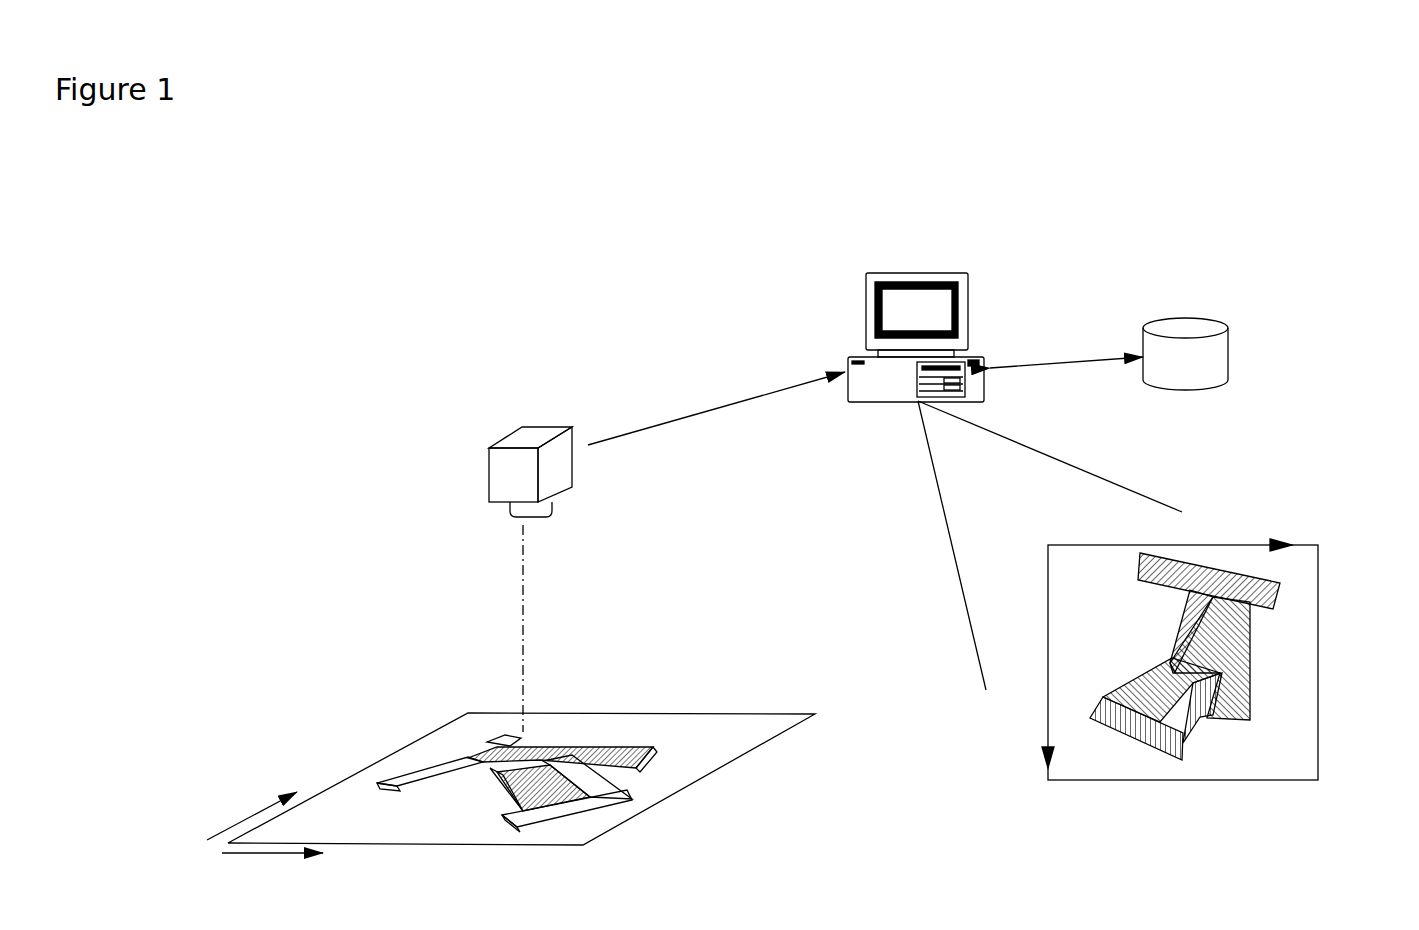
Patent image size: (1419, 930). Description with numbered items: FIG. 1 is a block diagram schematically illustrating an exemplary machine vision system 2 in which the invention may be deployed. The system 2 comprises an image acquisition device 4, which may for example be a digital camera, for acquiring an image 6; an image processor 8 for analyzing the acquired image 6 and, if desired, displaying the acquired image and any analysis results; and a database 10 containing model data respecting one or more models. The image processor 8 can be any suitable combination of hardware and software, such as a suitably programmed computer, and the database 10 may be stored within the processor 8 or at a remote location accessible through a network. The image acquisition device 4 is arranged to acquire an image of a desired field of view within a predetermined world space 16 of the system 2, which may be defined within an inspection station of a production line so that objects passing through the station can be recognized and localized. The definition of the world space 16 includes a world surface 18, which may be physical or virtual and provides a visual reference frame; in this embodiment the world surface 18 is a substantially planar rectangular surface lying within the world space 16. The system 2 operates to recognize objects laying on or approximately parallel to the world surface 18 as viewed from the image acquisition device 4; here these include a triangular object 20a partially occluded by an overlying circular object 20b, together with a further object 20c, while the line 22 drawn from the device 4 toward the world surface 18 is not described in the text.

The system 2 is at (711, 270).
The image acquisition device 4 is at (489, 470).
The image 6 is at (1337, 580).
The image processor 8 is at (868, 318).
The database 10 is at (1218, 343).
The world space 16 is at (378, 673).
The world surface 18 is at (700, 728).
The triangular object 20a is at (588, 750).
The circular object 20b is at (443, 762).
The object part c 20c is at (608, 800).
The camera optical axis 22 is at (525, 580).